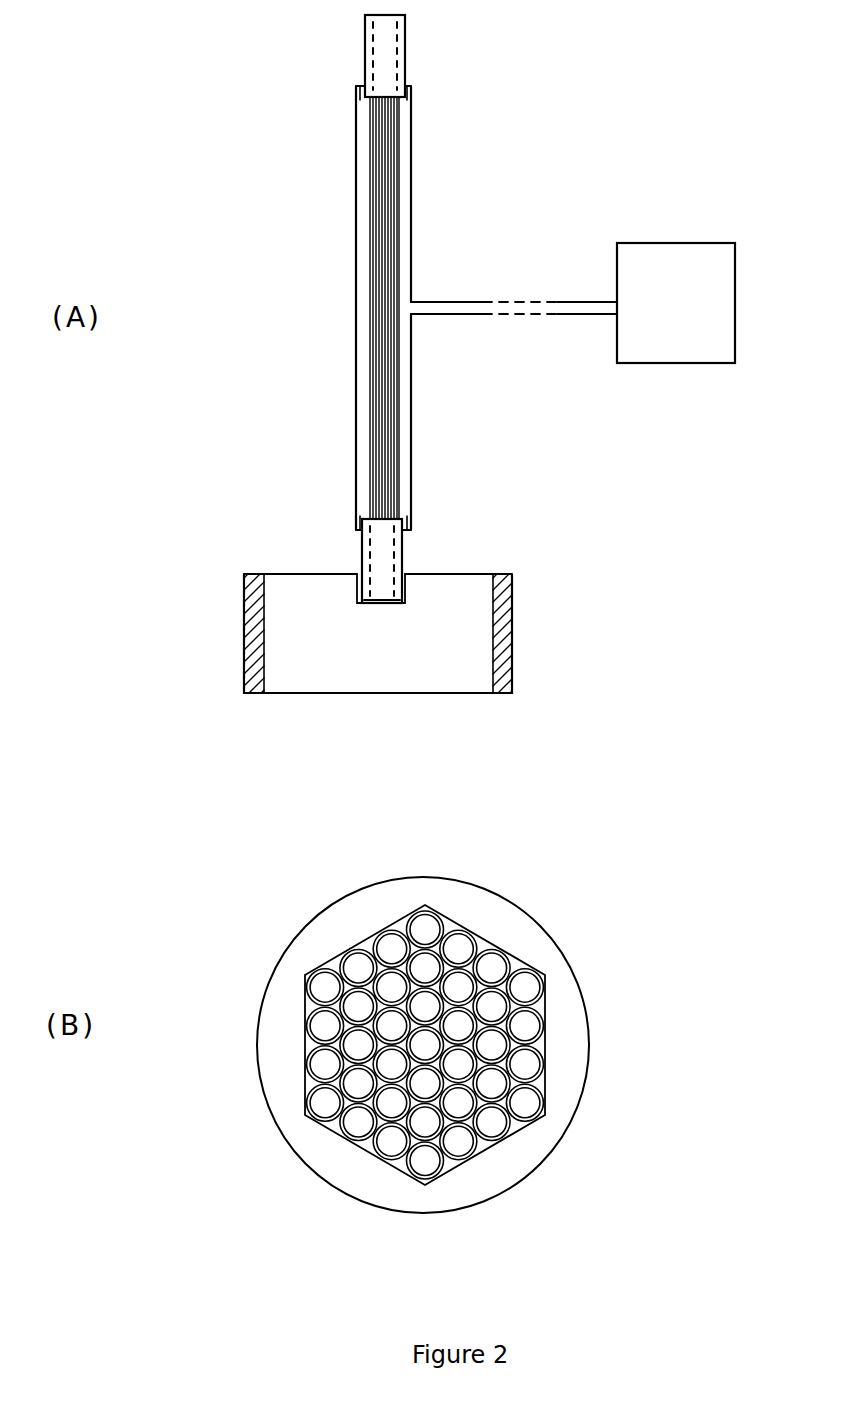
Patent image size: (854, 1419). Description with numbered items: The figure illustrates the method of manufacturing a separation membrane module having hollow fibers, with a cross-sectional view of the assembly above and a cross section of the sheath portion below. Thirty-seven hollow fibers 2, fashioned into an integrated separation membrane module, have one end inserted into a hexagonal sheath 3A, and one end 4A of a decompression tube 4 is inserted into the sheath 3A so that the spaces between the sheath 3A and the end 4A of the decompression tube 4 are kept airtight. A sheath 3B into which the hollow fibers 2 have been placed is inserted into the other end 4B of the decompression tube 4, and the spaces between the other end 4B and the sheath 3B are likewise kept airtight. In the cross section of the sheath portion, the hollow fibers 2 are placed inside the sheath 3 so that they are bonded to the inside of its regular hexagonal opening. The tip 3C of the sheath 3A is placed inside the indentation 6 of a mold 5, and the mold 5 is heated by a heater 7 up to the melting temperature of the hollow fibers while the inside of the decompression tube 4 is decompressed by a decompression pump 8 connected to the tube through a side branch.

The hollow fibers 2 is at (377, 232).
The sheath 3 is at (537, 948).
The hexagonal sheath 3A is at (400, 553).
The sheath 3B is at (405, 60).
The tip 3C is at (373, 593).
The decompression tube 4 is at (417, 220).
The one end of decompression tube 4A is at (355, 520).
The other end of decompression tube 4B is at (356, 87).
The mold 5 is at (318, 647).
The indentation 6 is at (402, 597).
The heater 7 is at (507, 647).
The decompression pump 8 is at (677, 273).